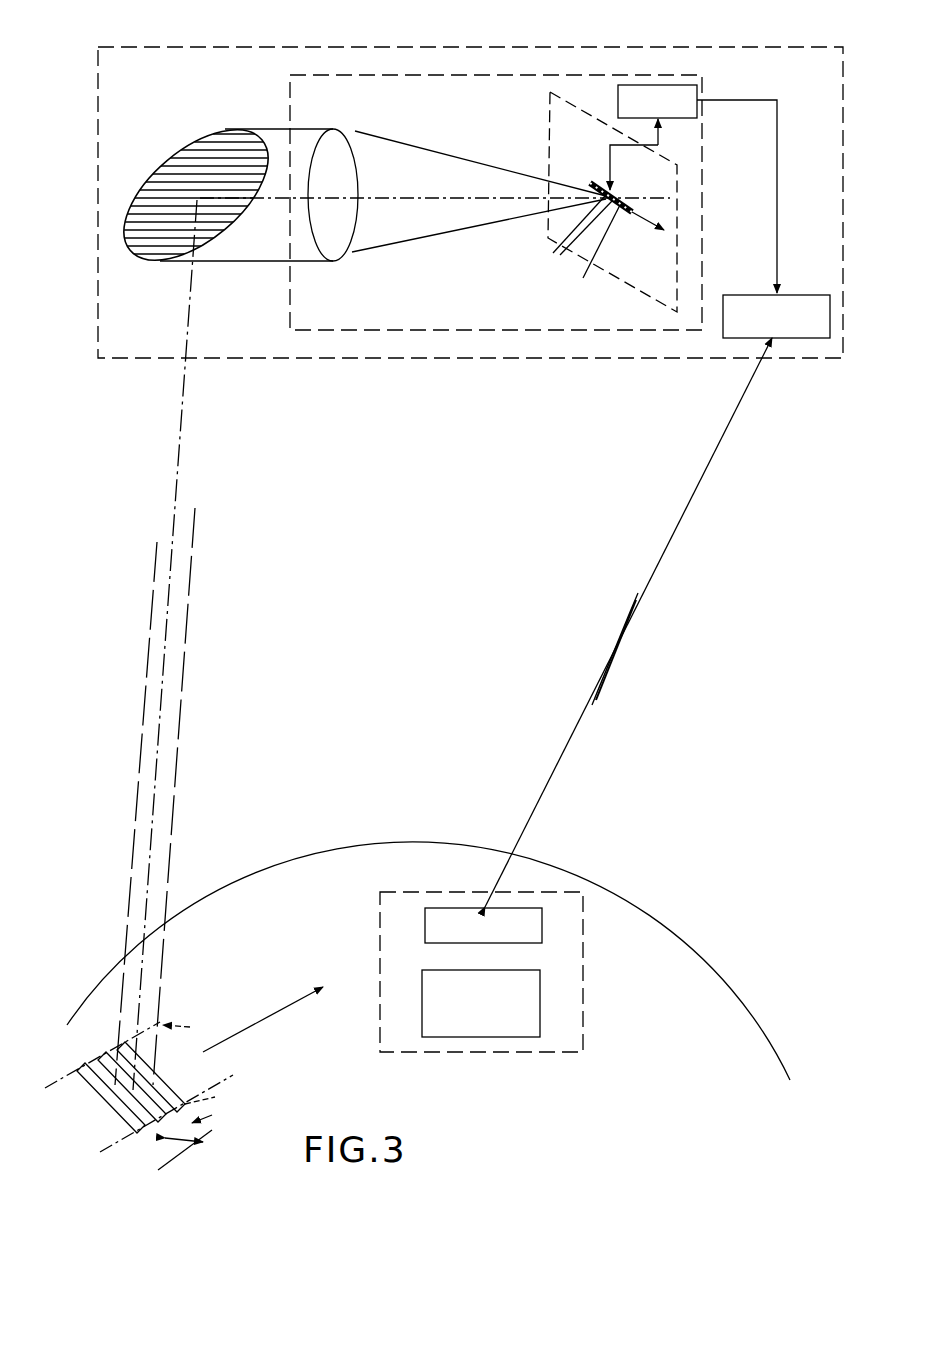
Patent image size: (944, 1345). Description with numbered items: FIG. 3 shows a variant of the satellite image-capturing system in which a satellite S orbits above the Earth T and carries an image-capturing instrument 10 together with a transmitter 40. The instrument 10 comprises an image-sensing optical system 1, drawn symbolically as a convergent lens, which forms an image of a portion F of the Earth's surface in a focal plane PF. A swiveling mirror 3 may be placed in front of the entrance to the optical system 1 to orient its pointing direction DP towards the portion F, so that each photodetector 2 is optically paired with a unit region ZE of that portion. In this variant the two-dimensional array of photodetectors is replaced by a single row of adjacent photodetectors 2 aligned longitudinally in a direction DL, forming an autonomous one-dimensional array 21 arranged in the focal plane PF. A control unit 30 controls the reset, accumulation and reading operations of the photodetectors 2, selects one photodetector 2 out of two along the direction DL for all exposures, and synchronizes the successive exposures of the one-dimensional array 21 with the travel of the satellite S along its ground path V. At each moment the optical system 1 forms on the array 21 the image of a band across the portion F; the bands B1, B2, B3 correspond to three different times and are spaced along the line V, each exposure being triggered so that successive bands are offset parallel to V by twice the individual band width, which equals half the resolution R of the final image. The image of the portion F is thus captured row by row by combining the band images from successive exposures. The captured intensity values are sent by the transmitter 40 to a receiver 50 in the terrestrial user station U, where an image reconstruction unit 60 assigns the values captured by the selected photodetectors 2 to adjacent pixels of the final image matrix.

The image-sensing optical system 1 is at (355, 242).
The photodetector 2 is at (584, 228).
The one-dimensional array of photodetectors 21 is at (595, 255).
The swiveling mirror 3 is at (220, 132).
The image-capturing instrument 10 is at (483, 330).
The control unit 30 is at (673, 85).
The transmitter 40 is at (805, 293).
The receiver 50 is at (543, 920).
The image reconstruction unit 60 is at (542, 1010).
The satellite S is at (798, 362).
The terrestrial station U is at (583, 1035).
The Earth T is at (660, 913).
The pointing direction DP is at (172, 593).
The focal plane PF is at (628, 284).
The longitudinal direction DL is at (648, 233).
The path of the satellite on the ground V is at (263, 1008).
The portion of the Earth's surface F is at (187, 1027).
The unit region ZE is at (150, 1052).
The band B1 is at (85, 1063).
The band B2 is at (108, 1052).
The band B3 is at (150, 1008).
The resolution R is at (192, 1142).